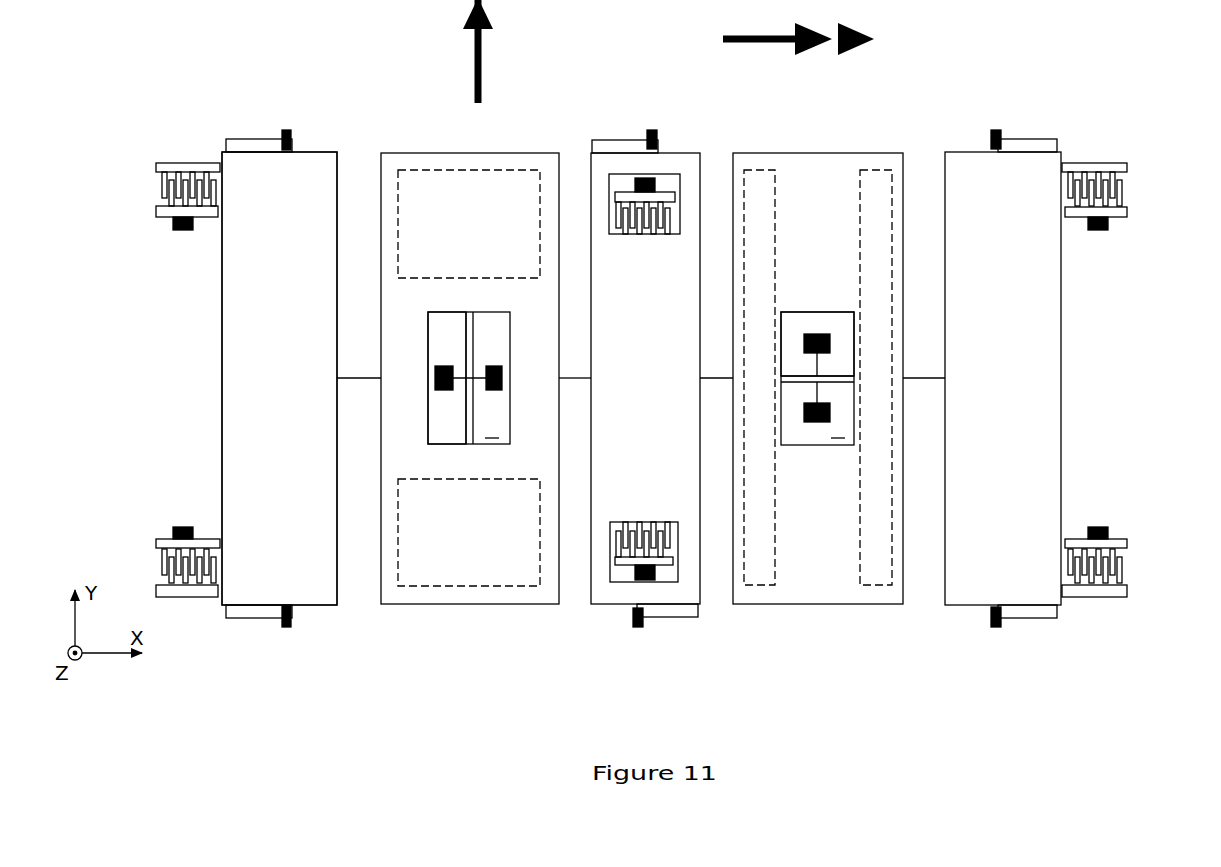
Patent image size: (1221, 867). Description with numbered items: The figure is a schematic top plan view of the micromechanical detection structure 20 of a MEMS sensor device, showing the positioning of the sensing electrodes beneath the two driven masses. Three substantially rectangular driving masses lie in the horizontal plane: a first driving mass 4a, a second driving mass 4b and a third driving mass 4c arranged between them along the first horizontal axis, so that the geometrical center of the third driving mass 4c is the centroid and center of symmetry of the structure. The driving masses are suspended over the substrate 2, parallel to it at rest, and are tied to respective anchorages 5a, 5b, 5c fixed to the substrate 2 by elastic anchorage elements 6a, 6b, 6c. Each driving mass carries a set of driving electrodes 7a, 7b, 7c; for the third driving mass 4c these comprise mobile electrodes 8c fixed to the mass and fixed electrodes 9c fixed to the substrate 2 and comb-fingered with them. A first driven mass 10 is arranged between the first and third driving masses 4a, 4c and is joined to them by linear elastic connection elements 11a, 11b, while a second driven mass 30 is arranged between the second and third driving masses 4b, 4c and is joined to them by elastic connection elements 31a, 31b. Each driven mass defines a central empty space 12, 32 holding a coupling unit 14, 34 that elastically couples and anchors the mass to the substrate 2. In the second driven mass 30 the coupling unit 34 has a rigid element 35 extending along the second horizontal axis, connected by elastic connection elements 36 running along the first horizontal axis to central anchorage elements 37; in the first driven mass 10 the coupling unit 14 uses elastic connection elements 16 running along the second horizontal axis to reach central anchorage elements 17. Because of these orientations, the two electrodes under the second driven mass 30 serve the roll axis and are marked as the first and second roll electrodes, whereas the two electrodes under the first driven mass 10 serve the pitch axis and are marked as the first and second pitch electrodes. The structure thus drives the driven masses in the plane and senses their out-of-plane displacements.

The detection structure 20 is at (150, 100).
The substrate 2 is at (665, 428).
The first driving mass 4a is at (958, 163).
The second driving mass 4b is at (319, 163).
The third driving mass 4c is at (675, 159).
The anchorage 5a is at (993, 130).
The anchorage 5b is at (286, 130).
The anchorage 5c is at (650, 130).
The elastic anchorage element 6a is at (1026, 139).
The elastic anchorage element 6b is at (246, 139).
The elastic anchorage element 6c is at (602, 140).
The set of driving electrodes 7a is at (1137, 183).
The set of driving electrodes 7b is at (158, 180).
The set of driving electrodes 7c is at (683, 163).
The mobile electrodes 8c is at (620, 222).
The fixed electrodes 9c is at (660, 222).
The first driven mass 10 is at (813, 162).
The elastic connection element 11a is at (926, 380).
The elastic connection element 11b is at (715, 380).
The empty space 12 is at (842, 320).
The coupling unit 14 is at (790, 322).
The elastic connection elements 16 is at (815, 393).
The central anchorage elements 17 is at (818, 334).
The second driven mass 30 is at (478, 163).
The elastic connection element 31a is at (360, 380).
The elastic connection element 31b is at (582, 380).
The empty space 32 is at (448, 443).
The coupling unit 34 is at (440, 313).
The rigid element 35 is at (473, 330).
The elastic connection elements 36 is at (482, 378).
The central anchorage elements 37 is at (435, 372).